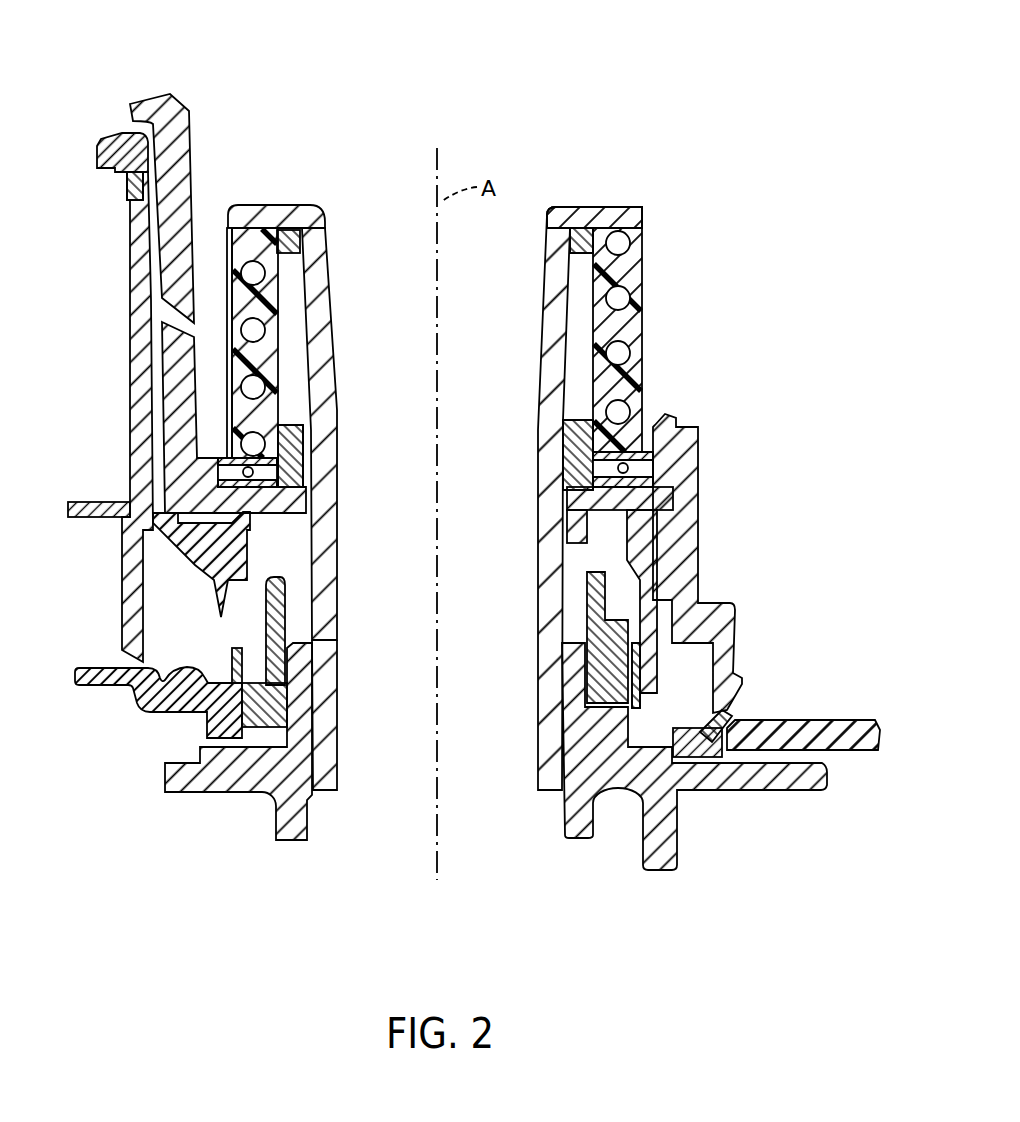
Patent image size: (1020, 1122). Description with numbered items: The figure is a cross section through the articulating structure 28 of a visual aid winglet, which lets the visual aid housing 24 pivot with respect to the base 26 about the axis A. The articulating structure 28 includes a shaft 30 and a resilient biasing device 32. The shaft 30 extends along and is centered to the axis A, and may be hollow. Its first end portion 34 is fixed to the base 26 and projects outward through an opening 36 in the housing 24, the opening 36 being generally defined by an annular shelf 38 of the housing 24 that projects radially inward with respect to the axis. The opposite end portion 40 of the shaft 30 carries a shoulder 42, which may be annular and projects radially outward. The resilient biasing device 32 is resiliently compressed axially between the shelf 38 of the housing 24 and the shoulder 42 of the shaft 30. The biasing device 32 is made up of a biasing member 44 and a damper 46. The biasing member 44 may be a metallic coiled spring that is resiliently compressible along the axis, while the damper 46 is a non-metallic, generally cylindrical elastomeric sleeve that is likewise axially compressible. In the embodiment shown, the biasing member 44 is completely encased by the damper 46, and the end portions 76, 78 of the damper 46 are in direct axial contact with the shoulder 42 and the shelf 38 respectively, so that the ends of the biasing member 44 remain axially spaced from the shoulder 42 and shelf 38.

The visual aid housing 24 is at (210, 128).
The base 26 is at (222, 806).
The articulating structure 28 is at (684, 442).
The shaft 30 is at (315, 463).
The resilient biasing device 32 is at (662, 240).
The first end portion 34 is at (340, 768).
The opening 36 is at (568, 453).
The annular shelf 38 is at (214, 458).
The opposite end portion 40 is at (332, 236).
The shoulder 42 is at (268, 207).
The biasing member 44 is at (620, 298).
The damper 46 is at (646, 357).
The end portion of the damper 76 is at (228, 247).
The end portion of the damper 78 is at (645, 440).